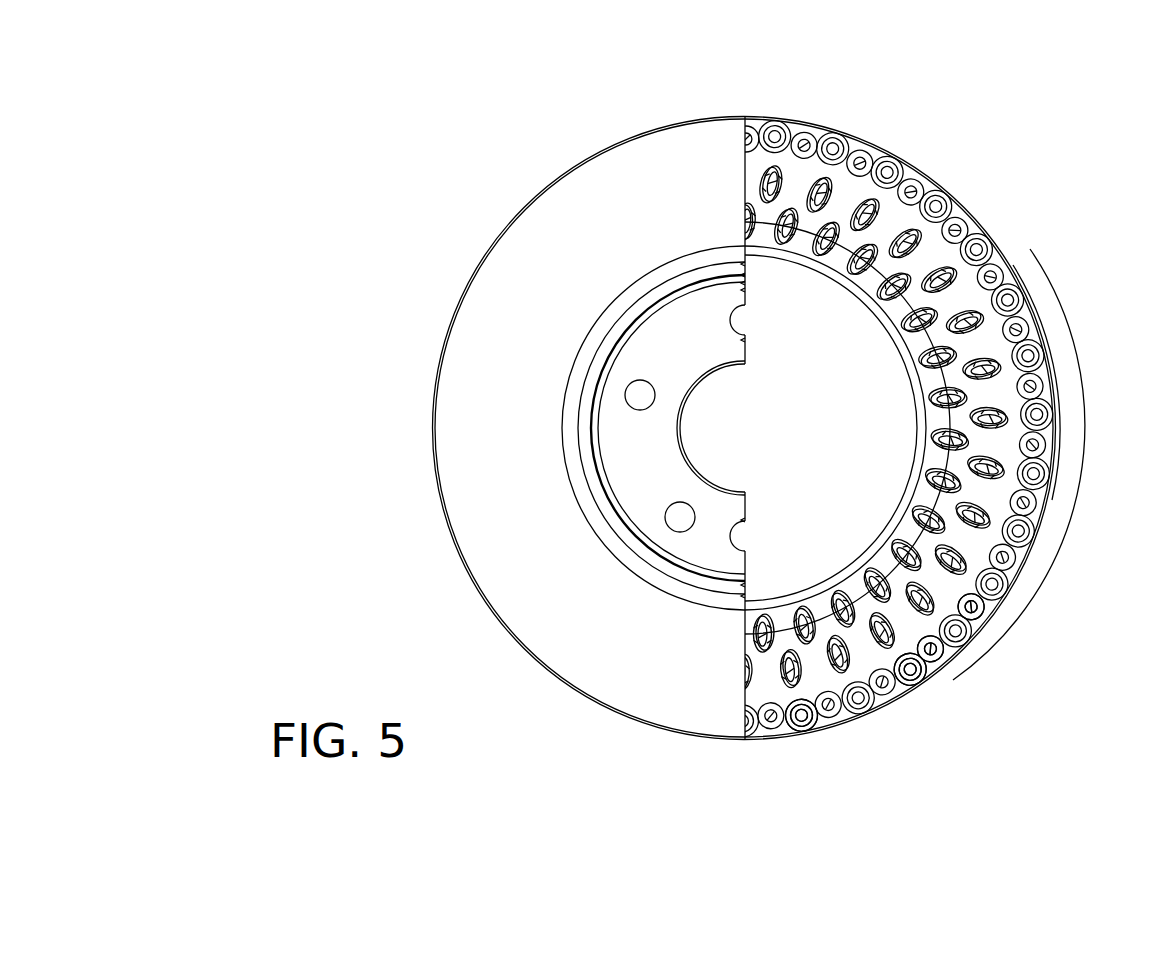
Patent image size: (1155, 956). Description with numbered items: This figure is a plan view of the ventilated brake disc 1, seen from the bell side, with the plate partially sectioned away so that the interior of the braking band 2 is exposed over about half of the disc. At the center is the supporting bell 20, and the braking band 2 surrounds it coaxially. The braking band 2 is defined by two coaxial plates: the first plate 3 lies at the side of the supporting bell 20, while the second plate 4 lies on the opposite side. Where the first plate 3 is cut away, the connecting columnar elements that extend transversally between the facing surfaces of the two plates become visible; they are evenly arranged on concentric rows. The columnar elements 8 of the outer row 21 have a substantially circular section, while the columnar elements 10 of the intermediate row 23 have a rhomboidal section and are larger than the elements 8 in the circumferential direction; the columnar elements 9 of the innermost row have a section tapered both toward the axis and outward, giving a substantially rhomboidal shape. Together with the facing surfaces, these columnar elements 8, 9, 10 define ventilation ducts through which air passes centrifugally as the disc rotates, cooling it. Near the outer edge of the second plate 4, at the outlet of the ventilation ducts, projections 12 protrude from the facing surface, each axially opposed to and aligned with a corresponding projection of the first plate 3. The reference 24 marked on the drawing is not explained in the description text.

The disc 1 is at (397, 306).
The braking band 2 is at (582, 718).
The first plate 3 is at (523, 270).
The second plate 4 is at (1013, 578).
The columnar elements of the outer row 8 is at (960, 658).
The columnar elements of the inner row 9 is at (1000, 442).
The columnar elements of the intermediate row 10 is at (1033, 520).
The projection 12 is at (820, 716).
The supporting bell 20 is at (638, 434).
The outer row 21 is at (1060, 367).
The intermediate row 23 is at (978, 289).
The elongated ventilation pillar 24 is at (918, 286).